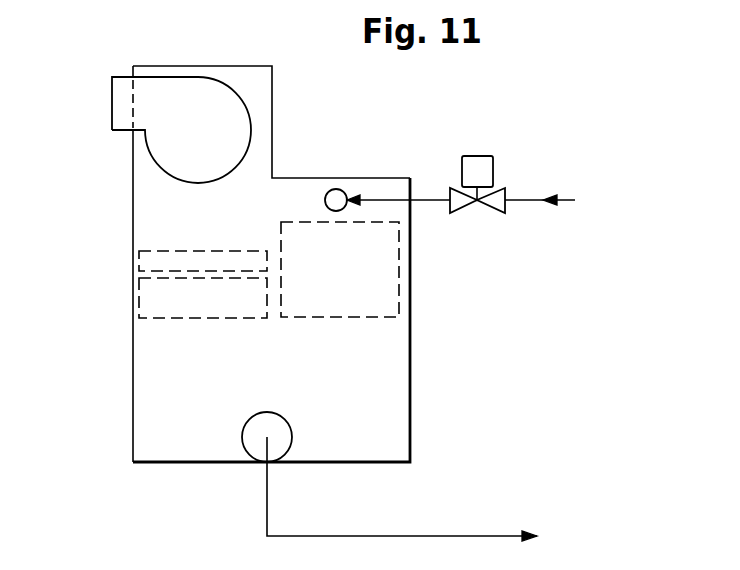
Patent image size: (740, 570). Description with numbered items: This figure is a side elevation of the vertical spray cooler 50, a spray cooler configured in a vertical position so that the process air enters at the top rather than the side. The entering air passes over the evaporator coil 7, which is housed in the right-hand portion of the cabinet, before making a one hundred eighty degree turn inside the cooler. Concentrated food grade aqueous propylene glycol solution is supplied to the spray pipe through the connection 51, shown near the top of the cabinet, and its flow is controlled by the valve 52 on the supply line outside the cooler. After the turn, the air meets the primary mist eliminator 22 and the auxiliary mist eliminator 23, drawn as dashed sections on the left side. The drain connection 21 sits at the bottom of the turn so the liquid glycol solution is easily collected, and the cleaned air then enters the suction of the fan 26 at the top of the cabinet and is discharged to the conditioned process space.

The vertical spray cooler 50 is at (133, 403).
The fan 26 is at (210, 137).
The auxiliary mist eliminator 23 is at (153, 257).
The primary mist eliminator 22 is at (150, 300).
The evaporator coil 7 is at (352, 284).
The connection 51 is at (343, 207).
The valve 52 is at (493, 172).
The drain connection 21 is at (244, 447).